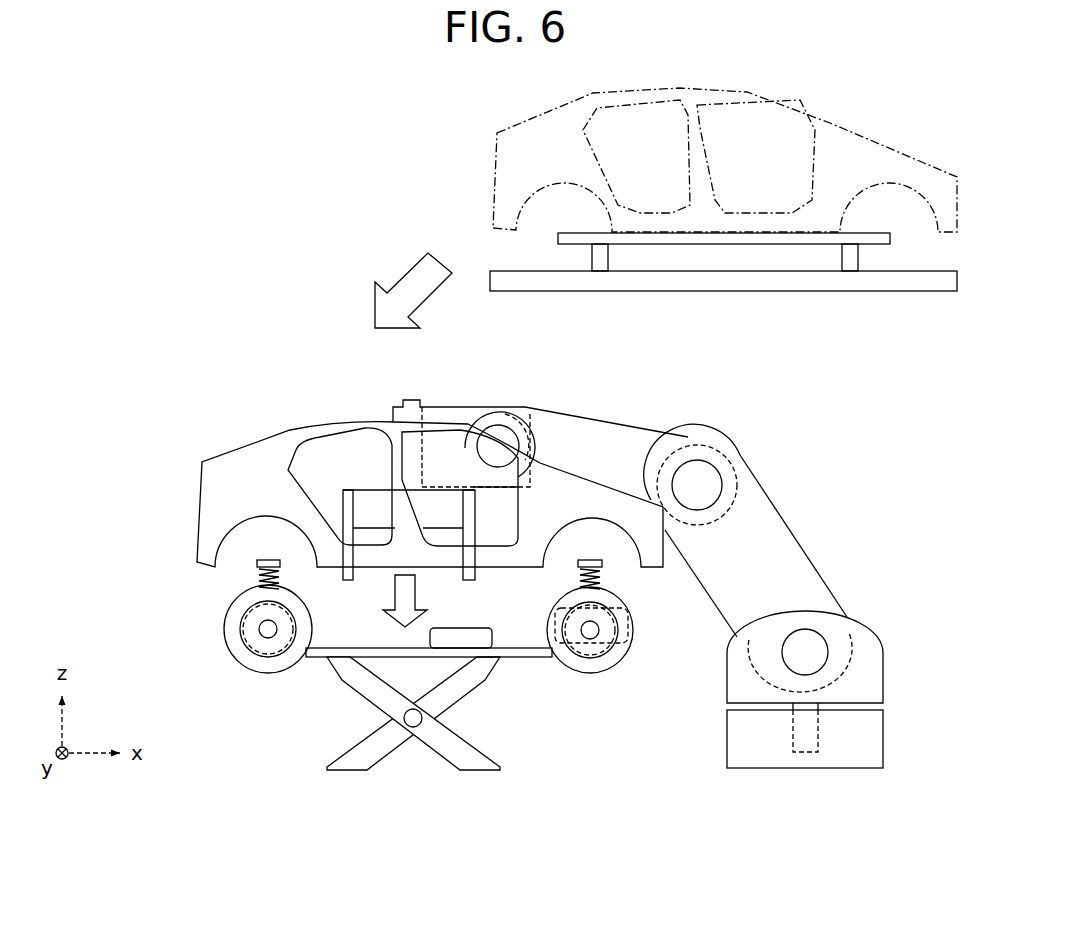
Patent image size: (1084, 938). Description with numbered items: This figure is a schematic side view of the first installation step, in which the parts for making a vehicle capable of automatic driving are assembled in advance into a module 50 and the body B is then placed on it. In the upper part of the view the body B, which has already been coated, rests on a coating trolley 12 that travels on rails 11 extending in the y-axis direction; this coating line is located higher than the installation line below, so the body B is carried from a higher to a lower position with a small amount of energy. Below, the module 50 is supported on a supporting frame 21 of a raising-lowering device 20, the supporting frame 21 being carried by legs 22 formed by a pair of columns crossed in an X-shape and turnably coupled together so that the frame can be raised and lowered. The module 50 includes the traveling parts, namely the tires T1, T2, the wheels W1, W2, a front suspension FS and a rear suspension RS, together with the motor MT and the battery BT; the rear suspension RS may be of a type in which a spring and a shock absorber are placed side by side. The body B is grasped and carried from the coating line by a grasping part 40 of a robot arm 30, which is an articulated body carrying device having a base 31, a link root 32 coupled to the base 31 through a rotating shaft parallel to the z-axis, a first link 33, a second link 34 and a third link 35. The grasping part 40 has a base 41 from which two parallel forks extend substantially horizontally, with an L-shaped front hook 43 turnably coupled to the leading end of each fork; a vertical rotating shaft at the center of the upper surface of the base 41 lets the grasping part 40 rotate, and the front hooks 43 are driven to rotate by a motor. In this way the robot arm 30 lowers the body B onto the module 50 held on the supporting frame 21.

The body B is at (937, 177).
The rails 11 is at (842, 255).
The coating trolley 12 is at (558, 238).
The raising-lowering device 20 is at (418, 672).
The supporting frame 21 is at (533, 658).
The legs 22 is at (352, 685).
The robot arm 30 is at (665, 563).
The base 31 is at (880, 737).
The link root 32 is at (880, 677).
The first link 33 is at (783, 530).
The second link 34 is at (605, 428).
The third link 35 is at (440, 407).
The grasping part 40 is at (386, 509).
The base 41 is at (370, 497).
The front hooks 43 is at (343, 515).
The module 50 is at (421, 643).
The rear suspension RS is at (242, 583).
The front suspension FS is at (605, 578).
The wheel W1 is at (568, 623).
The wheel W2 is at (240, 630).
The tire T1 is at (588, 673).
The tire T2 is at (268, 673).
The motor MT is at (640, 630).
The battery BT is at (442, 628).